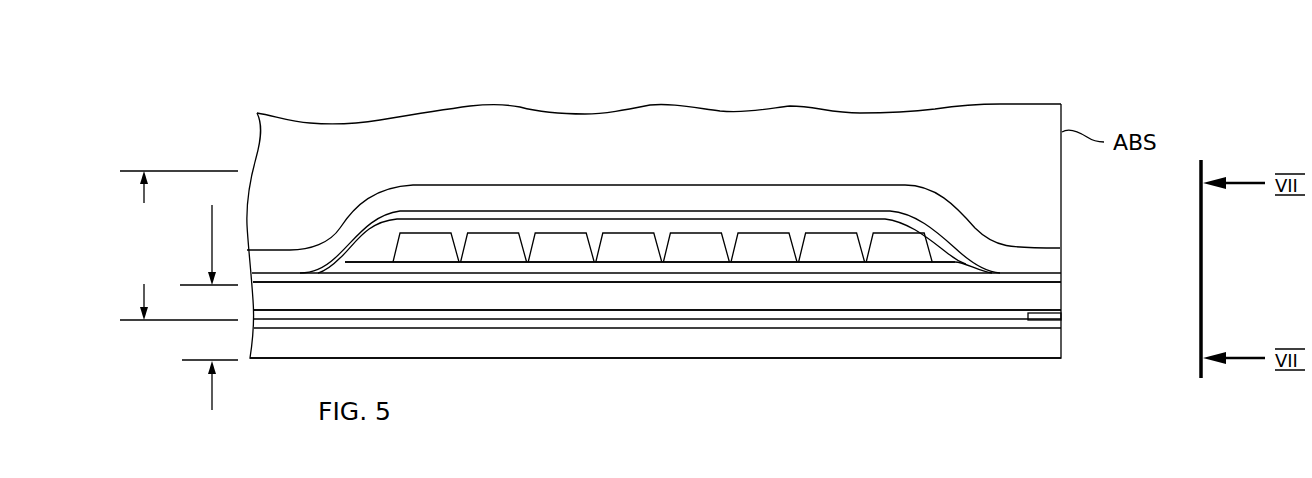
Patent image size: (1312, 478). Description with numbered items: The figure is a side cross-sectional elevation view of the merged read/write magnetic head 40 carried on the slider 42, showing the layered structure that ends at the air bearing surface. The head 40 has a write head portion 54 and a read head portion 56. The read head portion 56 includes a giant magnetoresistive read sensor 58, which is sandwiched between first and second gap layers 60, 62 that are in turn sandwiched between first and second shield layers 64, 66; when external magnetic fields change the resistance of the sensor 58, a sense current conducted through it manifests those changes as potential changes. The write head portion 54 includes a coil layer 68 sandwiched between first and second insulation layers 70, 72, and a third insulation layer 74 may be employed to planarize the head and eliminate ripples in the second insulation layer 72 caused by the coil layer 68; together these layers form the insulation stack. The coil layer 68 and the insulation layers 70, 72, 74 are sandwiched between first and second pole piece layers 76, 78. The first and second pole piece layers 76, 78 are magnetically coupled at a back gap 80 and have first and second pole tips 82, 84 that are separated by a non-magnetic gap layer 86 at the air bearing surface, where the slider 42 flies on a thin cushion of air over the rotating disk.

The magnetic head 40 is at (237, 94).
The slider 42 is at (323, 138).
The write head portion 54 is at (173, 245).
The read head portion 56 is at (207, 419).
The giant magnetoresistive read sensor 58 is at (1053, 316).
The first gap layer 60 is at (660, 328).
The second gap layer 62 is at (600, 310).
The first shield layer 64 is at (785, 340).
The second shield layer 66 is at (657, 348).
The coil layer 68 is at (698, 242).
The first insulation layer 70 is at (497, 268).
The second insulation layer 72 is at (942, 253).
The third insulation layer 74 is at (452, 217).
The first pole piece layer 76 is at (938, 296).
The second pole piece layer 78 is at (784, 198).
The back gap 80 is at (283, 250).
The first pole tip 82 is at (1062, 295).
The second pole tip 84 is at (1050, 260).
The non-magnetic gap layer 86 is at (1062, 278).